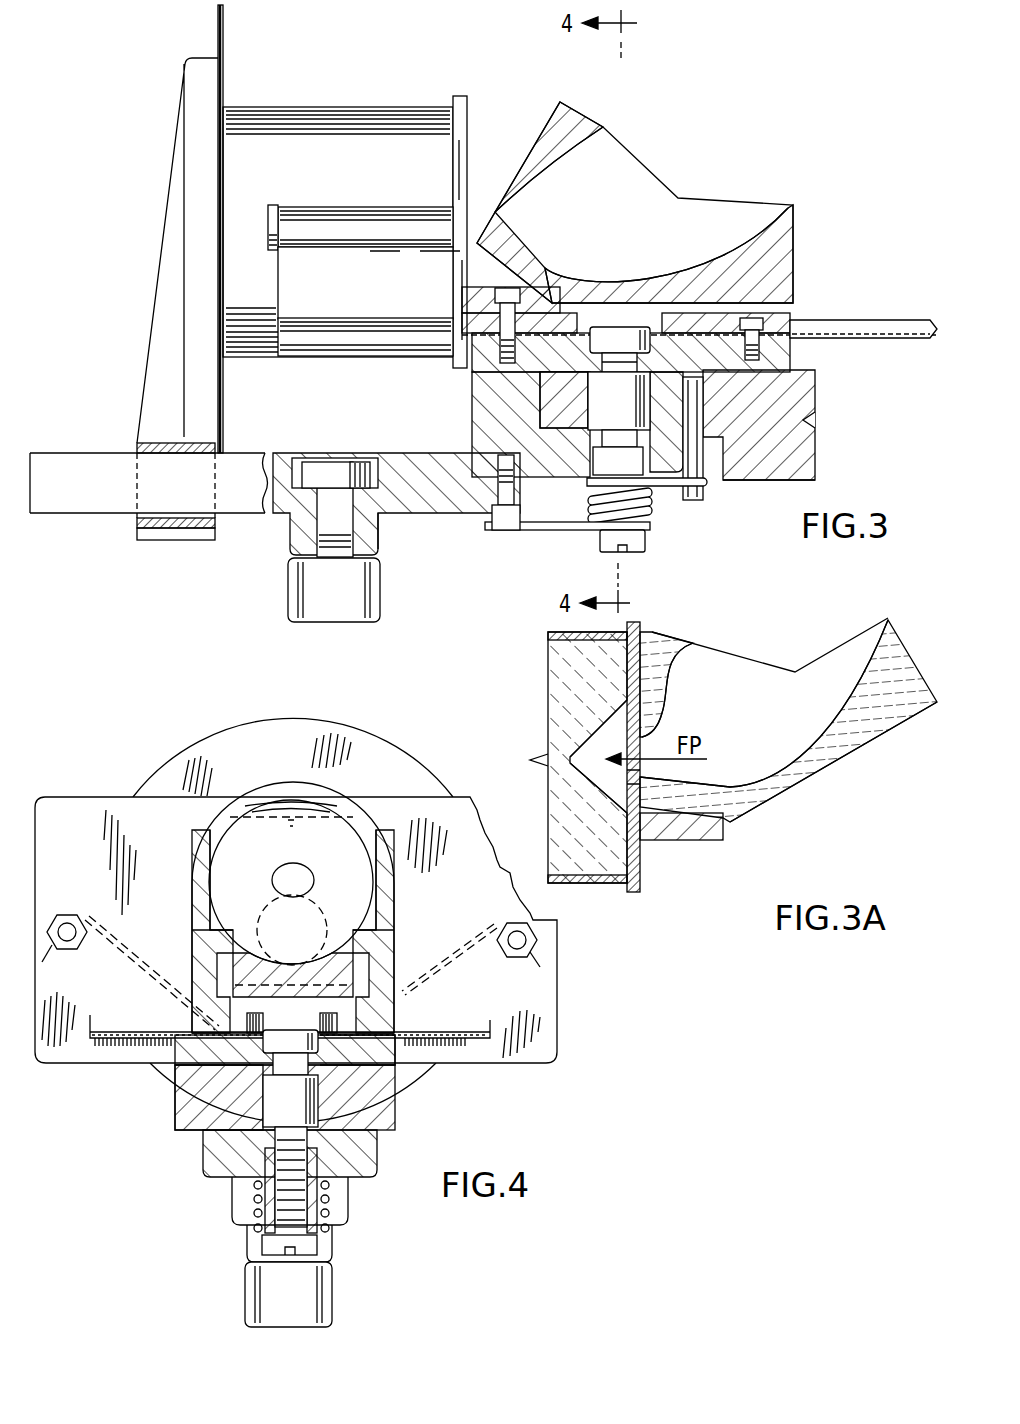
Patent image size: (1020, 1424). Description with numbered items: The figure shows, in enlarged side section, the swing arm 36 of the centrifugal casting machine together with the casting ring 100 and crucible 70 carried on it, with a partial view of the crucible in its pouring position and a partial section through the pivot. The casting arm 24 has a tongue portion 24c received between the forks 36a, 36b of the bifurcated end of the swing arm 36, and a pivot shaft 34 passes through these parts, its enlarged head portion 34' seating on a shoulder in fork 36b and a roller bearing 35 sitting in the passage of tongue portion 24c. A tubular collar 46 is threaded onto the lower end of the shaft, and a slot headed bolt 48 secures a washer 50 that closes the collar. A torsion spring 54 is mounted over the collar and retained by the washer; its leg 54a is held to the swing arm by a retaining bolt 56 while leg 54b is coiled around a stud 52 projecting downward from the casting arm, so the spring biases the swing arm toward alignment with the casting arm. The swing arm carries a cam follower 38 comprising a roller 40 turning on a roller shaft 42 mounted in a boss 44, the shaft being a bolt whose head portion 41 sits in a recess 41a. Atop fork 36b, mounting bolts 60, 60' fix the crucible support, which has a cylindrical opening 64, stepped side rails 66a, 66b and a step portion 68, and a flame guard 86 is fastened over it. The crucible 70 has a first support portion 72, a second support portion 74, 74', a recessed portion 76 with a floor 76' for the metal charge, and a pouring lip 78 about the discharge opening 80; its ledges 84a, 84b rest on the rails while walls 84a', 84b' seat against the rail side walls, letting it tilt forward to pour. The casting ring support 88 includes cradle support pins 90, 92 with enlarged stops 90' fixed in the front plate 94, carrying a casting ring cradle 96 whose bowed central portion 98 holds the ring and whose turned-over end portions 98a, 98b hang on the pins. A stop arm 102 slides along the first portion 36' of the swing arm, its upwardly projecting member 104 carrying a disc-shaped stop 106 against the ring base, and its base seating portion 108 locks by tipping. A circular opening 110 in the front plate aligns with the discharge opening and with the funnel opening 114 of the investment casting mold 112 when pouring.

In FIG. 3, the casting arm 24 is at (788, 477).
In FIG. 3, the tongue portion 24c is at (547, 411).
In FIG. 4, the tongue portion 24c is at (348, 1114).
In FIG. 3, the pivot shaft 34 is at (640, 361).
In FIG. 4, the pivot shaft 34 is at (271, 1185).
In FIG. 4, the enlarged head portion 34' is at (219, 1089).
In FIG. 3, the roller bearing 35 is at (604, 407).
In FIG. 4, the roller bearing 35 is at (277, 1107).
In FIG. 3, the swing arm 36 is at (396, 508).
In FIG. 4, the swing arm 36 is at (262, 1201).
In FIG. 3, the first portion 36' is at (149, 461).
In FIG. 3, the fork 36a is at (531, 467).
In FIG. 4, the fork 36a is at (328, 1166).
In FIG. 3, the fork 36b is at (536, 365).
In FIG. 4, the fork 36b is at (325, 1053).
In FIG. 3, the cam follower 38 is at (380, 559).
In FIG. 3, the roller 40 is at (328, 610).
In FIG. 4, the roller 40 is at (283, 1313).
In FIG. 3, the head portion 41 is at (330, 467).
In FIG. 3, the recess 41a is at (370, 470).
In FIG. 3, the roller shaft 42 is at (320, 527).
In FIG. 3, the boss 44 is at (363, 537).
In FIG. 3, the tubular collar 46 is at (604, 473).
In FIG. 3, the slot headed bolt 48 is at (640, 548).
In FIG. 4, the slot headed bolt 48 is at (268, 1250).
In FIG. 4, the washer 50 is at (320, 1240).
In FIG. 3, the stud 52 is at (692, 415).
In FIG. 3, the torsion spring 54 is at (653, 512).
In FIG. 4, the torsion spring 54 is at (333, 1197).
In FIG. 3, the leg 54a is at (552, 531).
In FIG. 3, the leg 54b is at (663, 490).
In FIG. 3, the retaining bolt 56 is at (522, 512).
In FIG. 3, the mounting bolt 60 is at (784, 342).
In FIG. 3, the mounting bolt 60' is at (468, 373).
In FIG. 3, the cylindrical opening 64 is at (684, 333).
In FIG. 4, the side rail 66a is at (190, 1020).
In FIG. 4, the side rail 66b is at (397, 1032).
In FIG. 3, the step portion 68 is at (467, 300).
In FIG. 3A, the step portion 68 is at (690, 842).
In FIG. 4, the step portion 68 is at (340, 1005).
In FIG. 3, the crucible 70 is at (647, 158).
In FIG. 3A, the crucible 70 is at (802, 788).
In FIG. 4, the crucible 70 is at (260, 784).
In FIG. 3A, the first support portion 72 is at (860, 750).
In FIG. 3, the second support portion 74 is at (549, 157).
In FIG. 3, the second support portion 74' is at (466, 312).
In FIG. 3, the recessed portion 76 is at (666, 245).
In FIG. 3A, the recessed portion 76 is at (764, 703).
In FIG. 3, the floor 76' is at (658, 257).
In FIG. 3, the pouring lip 78 is at (493, 210).
In FIG. 3, the discharge opening 80 is at (510, 197).
In FIG. 3A, the discharge opening 80 is at (643, 745).
In FIG. 4, the discharge opening 80 is at (307, 873).
In FIG. 4, the ledge 84a is at (184, 916).
In FIG. 4, the wall 84a' is at (178, 899).
In FIG. 4, the ledge 84b is at (401, 918).
In FIG. 4, the wall 84b' is at (416, 899).
In FIG. 3, the flame guard 86 is at (860, 332).
In FIG. 4, the flame guard 86 is at (473, 1032).
In FIG. 3, the casting ring support 88 is at (376, 362).
In FIG. 4, the cradle support pin 90 is at (64, 947).
In FIG. 3, the enlarged stop 90' is at (256, 204).
In FIG. 4, the cradle support pin 92 is at (517, 950).
In FIG. 3A, the front plate 94 is at (637, 867).
In FIG. 4, the front plate 94 is at (92, 797).
In FIG. 3, the casting ring cradle 96 is at (298, 289).
In FIG. 3, the bowed central portion 98 is at (310, 357).
In FIG. 4, the bowed central portion 98 is at (245, 1053).
In FIG. 3, the end portion 98a is at (378, 227).
In FIG. 4, the end portion 98a is at (65, 910).
In FIG. 4, the end portion 98b is at (510, 913).
In FIG. 3, the casting ring 100 is at (390, 113).
In FIG. 3, the casting ring stop arm 102 is at (163, 235).
In FIG. 3, the upwardly projecting member 104 is at (195, 187).
In FIG. 3, the stop 106 is at (224, 40).
In FIG. 4, the stop 106 is at (186, 750).
In FIG. 3, the base seating portion 108 is at (172, 534).
In FIG. 3A, the circular opening 110 is at (627, 782).
In FIG. 4, the circular opening 110 is at (267, 920).
In FIG. 3A, the investment casting mold 112 is at (548, 672).
In FIG. 3A, the funnel opening 114 is at (584, 757).